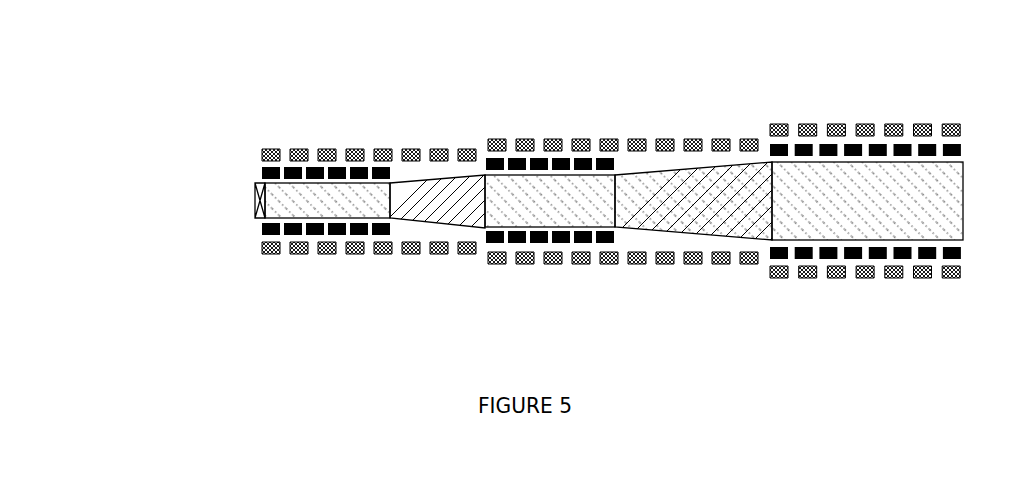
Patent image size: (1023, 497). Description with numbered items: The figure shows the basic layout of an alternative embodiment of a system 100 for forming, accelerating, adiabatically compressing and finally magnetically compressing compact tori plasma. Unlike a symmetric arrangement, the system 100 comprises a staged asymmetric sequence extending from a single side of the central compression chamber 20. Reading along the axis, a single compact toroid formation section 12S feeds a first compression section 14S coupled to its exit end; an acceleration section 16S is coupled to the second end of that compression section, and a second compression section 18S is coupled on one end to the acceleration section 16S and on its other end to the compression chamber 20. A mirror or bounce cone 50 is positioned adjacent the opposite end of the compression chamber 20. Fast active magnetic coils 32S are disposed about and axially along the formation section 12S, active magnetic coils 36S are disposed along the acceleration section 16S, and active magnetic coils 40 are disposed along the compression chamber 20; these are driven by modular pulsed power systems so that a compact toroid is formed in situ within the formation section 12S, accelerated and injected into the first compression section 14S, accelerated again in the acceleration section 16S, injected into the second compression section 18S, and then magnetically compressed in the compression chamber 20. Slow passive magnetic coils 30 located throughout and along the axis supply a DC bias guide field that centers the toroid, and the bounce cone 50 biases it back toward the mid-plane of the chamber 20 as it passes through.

The system 100 is at (452, 46).
The slow passive magnetic coils 30 is at (269, 148).
The compression chamber 20 is at (370, 183).
The second compression section 18S is at (420, 180).
The acceleration section 16S is at (505, 175).
The first compression section 14S is at (676, 170).
The compact toroid formation section 12S is at (790, 162).
The mirror or bounce cone 50 is at (255, 218).
The active magnetic coils 40 is at (316, 232).
The active magnetic coils 36S is at (542, 243).
The active magnetic coils 32S is at (852, 260).